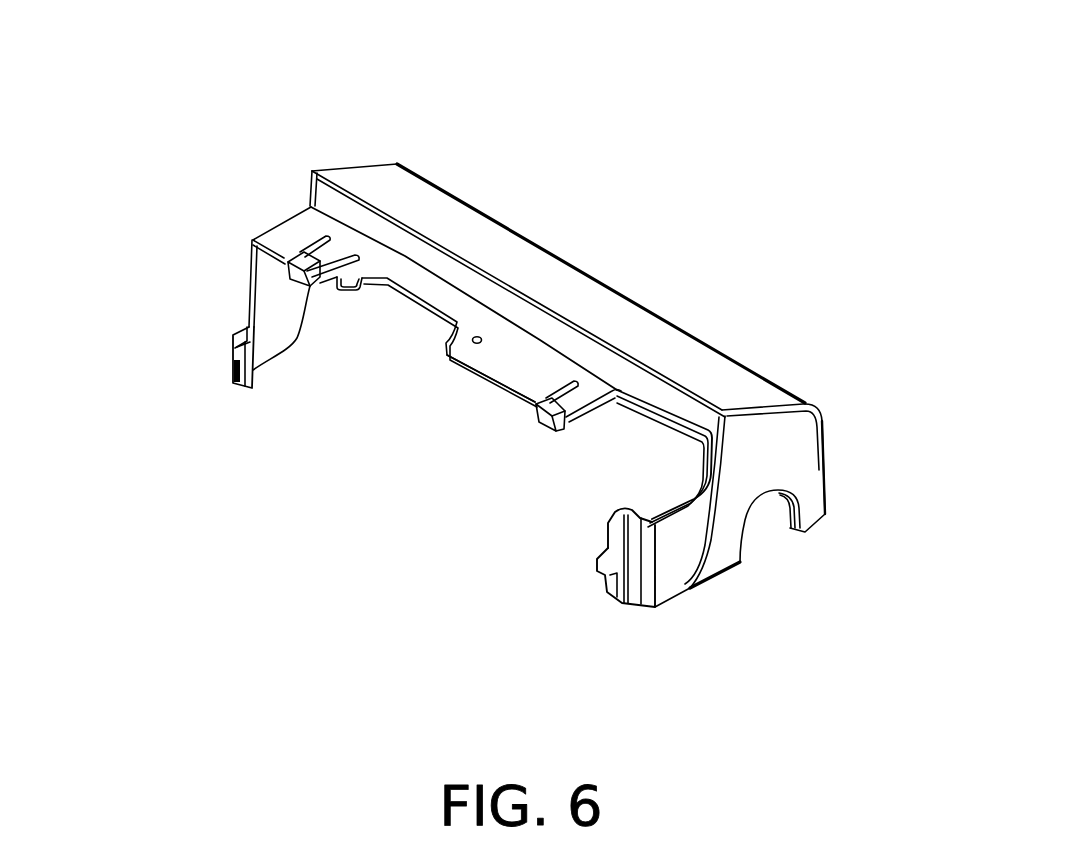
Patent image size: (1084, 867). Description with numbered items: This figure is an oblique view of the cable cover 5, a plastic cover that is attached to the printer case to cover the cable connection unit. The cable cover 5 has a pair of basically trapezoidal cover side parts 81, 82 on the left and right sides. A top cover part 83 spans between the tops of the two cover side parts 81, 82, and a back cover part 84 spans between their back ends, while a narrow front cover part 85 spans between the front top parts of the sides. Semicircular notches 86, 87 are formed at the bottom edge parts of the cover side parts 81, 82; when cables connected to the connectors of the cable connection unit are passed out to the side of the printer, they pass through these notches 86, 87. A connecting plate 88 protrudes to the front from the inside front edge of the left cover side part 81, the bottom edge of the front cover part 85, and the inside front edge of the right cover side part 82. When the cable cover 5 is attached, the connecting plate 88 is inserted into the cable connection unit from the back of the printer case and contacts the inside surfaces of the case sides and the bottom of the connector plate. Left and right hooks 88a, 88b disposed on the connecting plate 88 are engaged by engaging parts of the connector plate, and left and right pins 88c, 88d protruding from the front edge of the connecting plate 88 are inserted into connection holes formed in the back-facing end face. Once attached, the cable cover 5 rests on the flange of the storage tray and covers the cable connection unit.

The cable cover 5 is at (608, 119).
The cover side part 81 is at (304, 200).
The cover side part 82 is at (783, 455).
The top cover part 83 is at (440, 216).
The back cover part 84 is at (823, 433).
The front cover part 85 is at (612, 407).
The semicircular notch 86 is at (343, 297).
The semicircular notch 87 is at (770, 522).
The connecting plate 88 is at (494, 355).
The hook 88a is at (283, 283).
The hook 88b is at (580, 398).
The pin 88c is at (233, 366).
The pin 88d is at (600, 578).